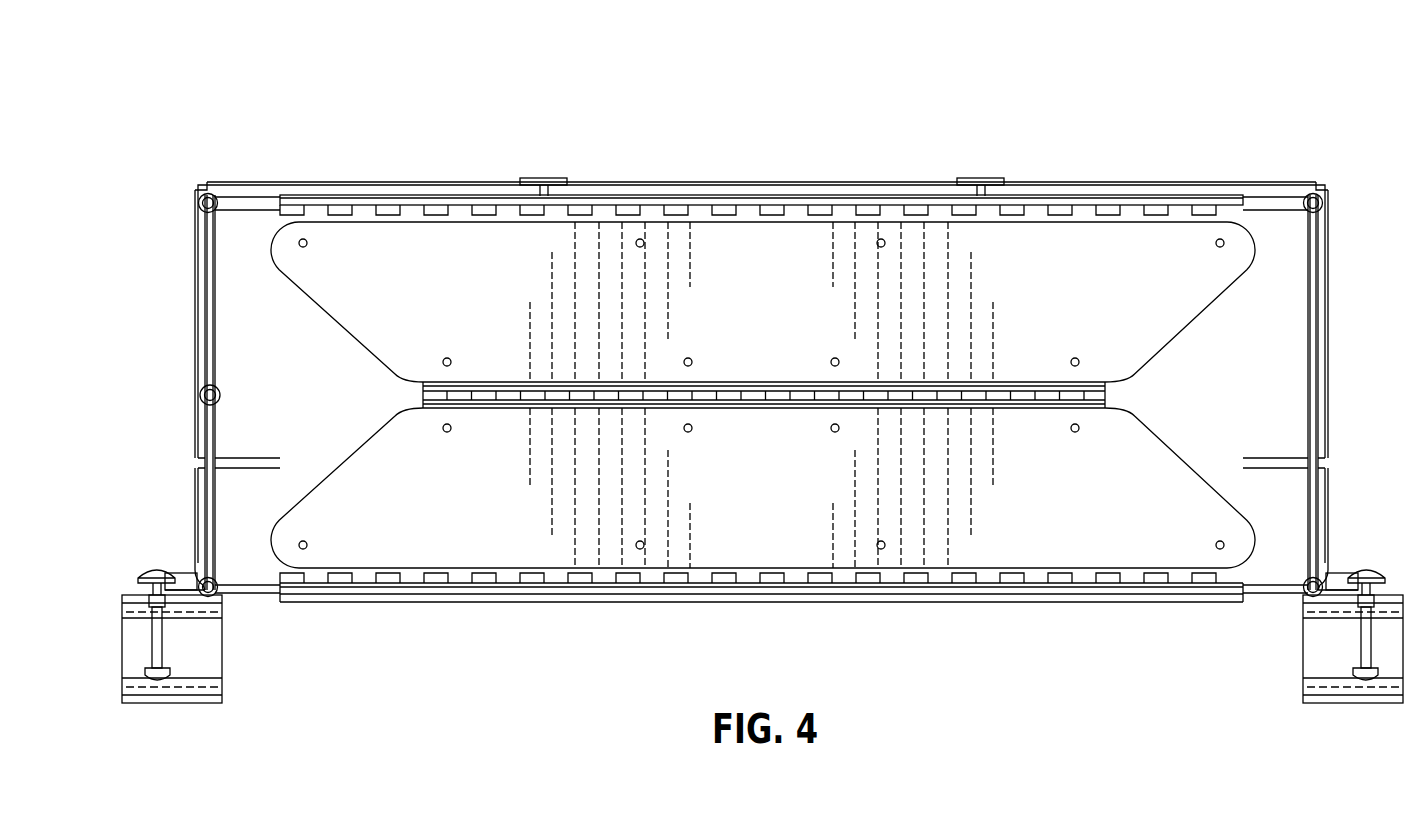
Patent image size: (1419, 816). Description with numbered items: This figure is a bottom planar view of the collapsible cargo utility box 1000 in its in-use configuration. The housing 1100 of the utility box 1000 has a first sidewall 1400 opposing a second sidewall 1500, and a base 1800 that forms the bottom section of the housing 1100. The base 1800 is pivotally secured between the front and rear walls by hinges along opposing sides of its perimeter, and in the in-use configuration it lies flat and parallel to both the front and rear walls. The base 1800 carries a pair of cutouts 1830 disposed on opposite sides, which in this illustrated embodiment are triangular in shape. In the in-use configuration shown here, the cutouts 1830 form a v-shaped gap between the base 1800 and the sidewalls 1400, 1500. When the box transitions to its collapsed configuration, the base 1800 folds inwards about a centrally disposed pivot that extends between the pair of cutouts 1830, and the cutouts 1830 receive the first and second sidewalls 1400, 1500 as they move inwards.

The collapsible cargo utility box 1000 is at (751, 376).
The housing 1100 is at (203, 229).
The first sidewall 1400 is at (201, 380).
The second sidewall 1500 is at (1329, 224).
The base 1800 is at (1170, 272).
The cutouts 1830 is at (1195, 380).